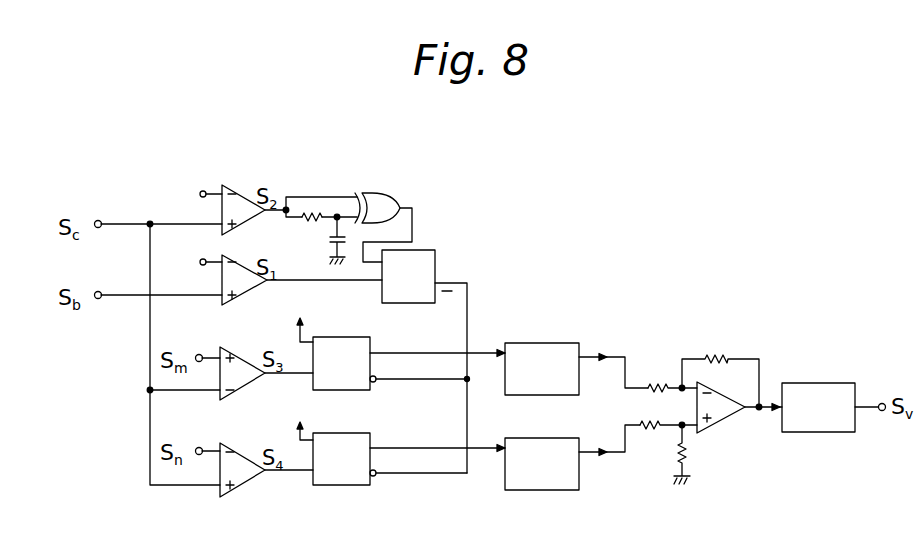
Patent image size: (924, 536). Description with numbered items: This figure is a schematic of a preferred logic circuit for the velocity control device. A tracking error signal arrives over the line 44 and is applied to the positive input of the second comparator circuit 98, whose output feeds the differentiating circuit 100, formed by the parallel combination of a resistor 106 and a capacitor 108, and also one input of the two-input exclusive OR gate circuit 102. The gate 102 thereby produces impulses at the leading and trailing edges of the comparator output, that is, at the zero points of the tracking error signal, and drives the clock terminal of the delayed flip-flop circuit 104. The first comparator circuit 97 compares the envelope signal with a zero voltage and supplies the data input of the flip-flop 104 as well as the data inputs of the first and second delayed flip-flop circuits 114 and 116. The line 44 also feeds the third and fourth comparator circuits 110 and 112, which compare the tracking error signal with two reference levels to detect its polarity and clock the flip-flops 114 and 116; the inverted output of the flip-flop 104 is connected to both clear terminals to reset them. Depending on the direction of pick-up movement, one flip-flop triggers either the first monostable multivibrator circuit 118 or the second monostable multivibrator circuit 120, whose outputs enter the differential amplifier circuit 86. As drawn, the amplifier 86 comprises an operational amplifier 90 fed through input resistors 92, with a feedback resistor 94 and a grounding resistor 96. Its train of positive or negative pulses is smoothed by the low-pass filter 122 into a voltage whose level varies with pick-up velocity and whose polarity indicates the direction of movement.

The line 44 is at (125, 221).
The second comparator circuit 98 is at (229, 186).
The first comparator circuit 97 is at (250, 291).
The differentiating circuit 100 is at (304, 205).
The two-input exclusive OR gate circuit 102 is at (386, 192).
The delayed flip-flop circuit 104 is at (436, 250).
The resistor 106 is at (300, 228).
The capacitor 108 is at (326, 246).
The third comparator circuit 110 is at (240, 389).
The fourth comparator circuit 112 is at (247, 485).
The first delayed flip-flop circuit 114 is at (340, 337).
The second delayed flip-flop circuit 116 is at (340, 487).
The first monostable multivibrator circuit 118 is at (543, 343).
The second monostable multivibrator circuit 120 is at (545, 490).
The differential amplifier circuit 86 is at (706, 416).
The operational amplifier 90 is at (728, 420).
The input resistor 92 is at (660, 380).
The feedback resistor 94 is at (720, 355).
The first comparator circuit 96 is at (673, 466).
The low-pass filter 122 is at (824, 382).